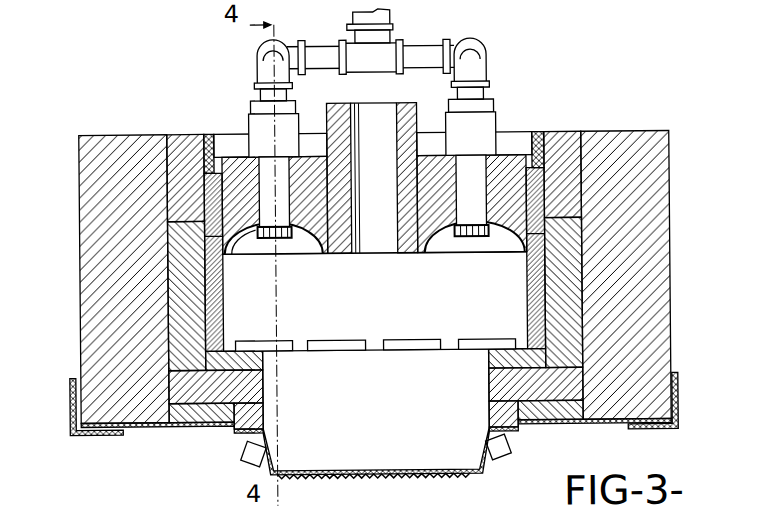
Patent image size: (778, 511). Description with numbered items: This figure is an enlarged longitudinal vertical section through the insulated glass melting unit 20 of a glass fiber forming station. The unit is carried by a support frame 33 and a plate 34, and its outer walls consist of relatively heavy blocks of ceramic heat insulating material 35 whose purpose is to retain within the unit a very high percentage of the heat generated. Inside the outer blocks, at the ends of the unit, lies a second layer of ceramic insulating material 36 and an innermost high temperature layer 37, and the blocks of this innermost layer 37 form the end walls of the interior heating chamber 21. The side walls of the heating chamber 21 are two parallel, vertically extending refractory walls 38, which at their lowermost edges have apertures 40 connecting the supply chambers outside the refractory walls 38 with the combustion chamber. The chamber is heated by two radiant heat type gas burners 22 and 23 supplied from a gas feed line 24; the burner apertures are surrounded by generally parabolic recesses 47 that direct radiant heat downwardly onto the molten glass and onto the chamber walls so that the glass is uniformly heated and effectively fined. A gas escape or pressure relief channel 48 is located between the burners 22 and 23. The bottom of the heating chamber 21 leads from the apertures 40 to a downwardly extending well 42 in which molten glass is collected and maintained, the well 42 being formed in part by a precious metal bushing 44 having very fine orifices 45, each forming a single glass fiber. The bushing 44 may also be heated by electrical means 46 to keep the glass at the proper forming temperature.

The glass melting unit 20 is at (675, 244).
The heating chamber 21 is at (254, 309).
The gas burner 22 is at (258, 246).
The gas burner 23 is at (490, 243).
The gas feed line 24 is at (410, 46).
The support frame 33 is at (678, 401).
The plate 34 is at (572, 426).
The heat insulating material 35 is at (92, 318).
The ceramic insulating material 36 is at (170, 270).
The high temperature layer 37 is at (214, 319).
The refractory walls 38 is at (372, 307).
The apertures 40 is at (282, 343).
The well 42 is at (446, 362).
The precious metal bushing 44 is at (476, 473).
The orifices 45 is at (415, 479).
The electrical means 46 is at (240, 458).
The combustion chamber arch 47 is at (306, 246).
The pressure relief channel 48 is at (378, 108).